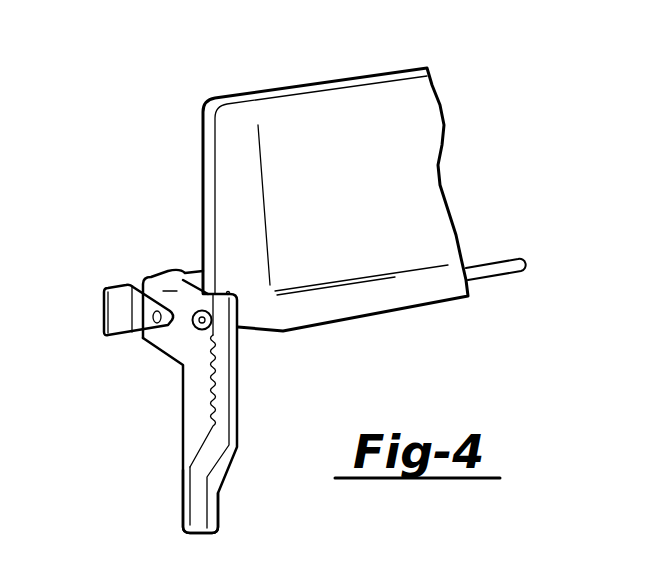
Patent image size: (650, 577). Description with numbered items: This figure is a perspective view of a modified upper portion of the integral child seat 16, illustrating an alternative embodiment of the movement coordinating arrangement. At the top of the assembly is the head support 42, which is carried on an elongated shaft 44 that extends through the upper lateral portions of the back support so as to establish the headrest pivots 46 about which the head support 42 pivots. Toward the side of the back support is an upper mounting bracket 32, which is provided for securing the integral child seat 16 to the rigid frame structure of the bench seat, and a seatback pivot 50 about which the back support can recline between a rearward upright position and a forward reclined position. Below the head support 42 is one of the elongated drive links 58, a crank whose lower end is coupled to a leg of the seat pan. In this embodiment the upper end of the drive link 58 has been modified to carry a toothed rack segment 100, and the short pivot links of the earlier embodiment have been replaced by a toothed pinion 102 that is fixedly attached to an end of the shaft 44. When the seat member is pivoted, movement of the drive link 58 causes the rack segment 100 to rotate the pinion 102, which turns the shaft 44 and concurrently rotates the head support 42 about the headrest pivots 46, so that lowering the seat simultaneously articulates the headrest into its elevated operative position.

The integral child seat 16 is at (303, 78).
The head support 42 is at (380, 113).
The elongated shaft 44 is at (500, 286).
The headrest pivots 46 is at (228, 292).
The upper mounting bracket 32 is at (118, 311).
The seatback pivots 50 is at (153, 323).
The drive links 58 is at (198, 492).
The toothed rack segment 100 is at (223, 390).
The toothed pinions 102 is at (212, 339).